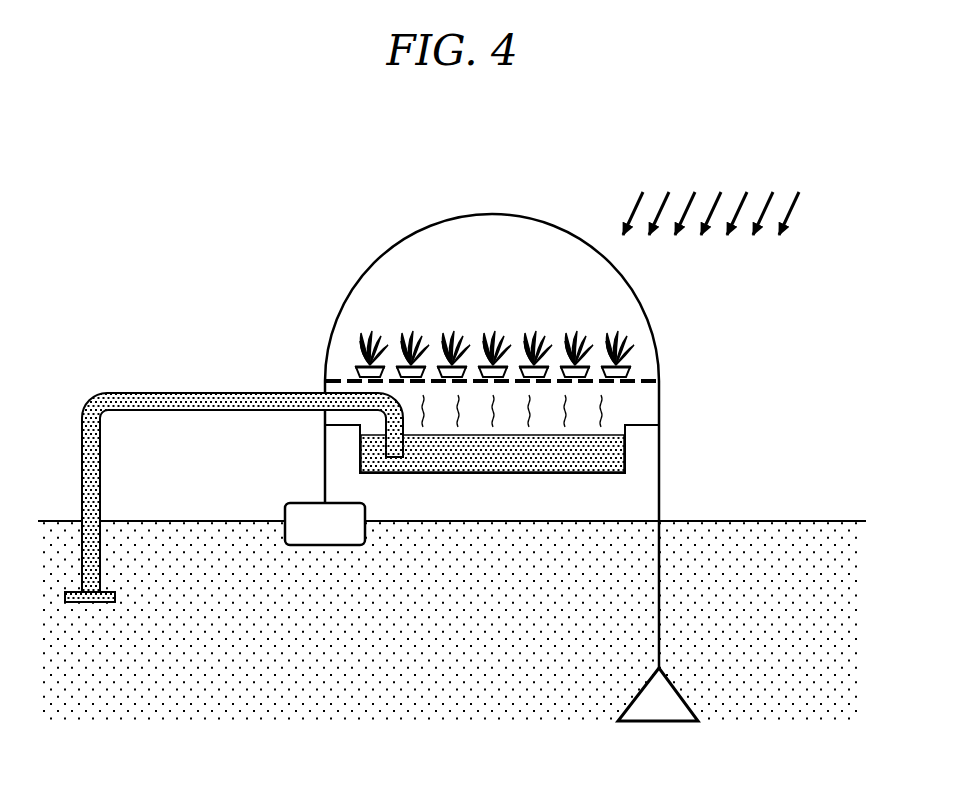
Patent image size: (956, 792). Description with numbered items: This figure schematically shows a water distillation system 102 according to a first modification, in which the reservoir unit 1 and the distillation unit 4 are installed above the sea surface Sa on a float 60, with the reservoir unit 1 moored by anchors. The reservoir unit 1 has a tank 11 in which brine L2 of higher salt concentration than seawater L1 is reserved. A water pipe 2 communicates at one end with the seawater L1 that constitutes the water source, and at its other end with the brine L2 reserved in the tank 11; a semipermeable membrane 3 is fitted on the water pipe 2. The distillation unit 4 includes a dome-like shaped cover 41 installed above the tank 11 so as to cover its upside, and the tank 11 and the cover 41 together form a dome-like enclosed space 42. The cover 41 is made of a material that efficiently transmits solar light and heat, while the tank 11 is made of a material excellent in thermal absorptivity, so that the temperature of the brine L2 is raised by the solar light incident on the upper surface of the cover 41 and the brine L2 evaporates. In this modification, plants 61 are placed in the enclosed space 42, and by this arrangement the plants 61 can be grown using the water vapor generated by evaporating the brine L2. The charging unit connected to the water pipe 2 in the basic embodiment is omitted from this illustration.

The reservoir unit 1 is at (492, 455).
The tank 11 is at (437, 474).
The water pipe 2 is at (200, 392).
The semipermeable membrane 3 is at (91, 604).
The distillation unit 4 is at (511, 448).
The cover 41 is at (392, 247).
The enclosed space 42 is at (442, 237).
The float 60 is at (296, 503).
The plants 61 is at (510, 325).
The water distillation system 102 is at (583, 195).
The seawater L1 is at (155, 532).
The brine L2 is at (503, 465).
The sea surface Sa is at (218, 522).